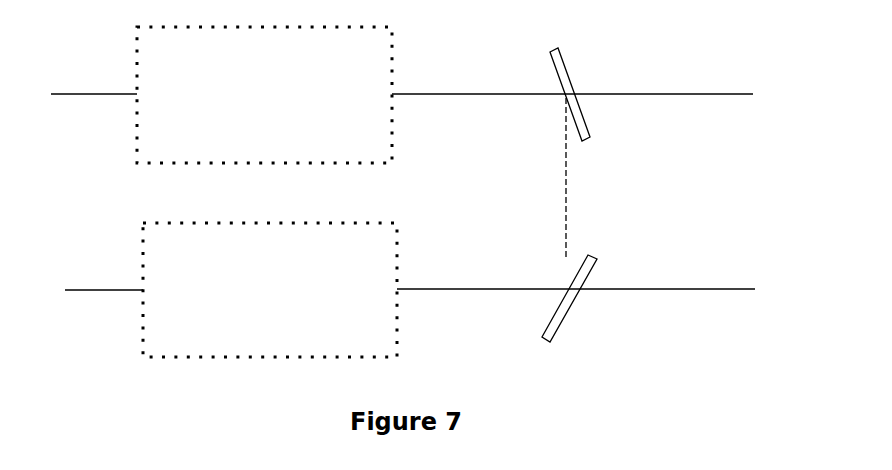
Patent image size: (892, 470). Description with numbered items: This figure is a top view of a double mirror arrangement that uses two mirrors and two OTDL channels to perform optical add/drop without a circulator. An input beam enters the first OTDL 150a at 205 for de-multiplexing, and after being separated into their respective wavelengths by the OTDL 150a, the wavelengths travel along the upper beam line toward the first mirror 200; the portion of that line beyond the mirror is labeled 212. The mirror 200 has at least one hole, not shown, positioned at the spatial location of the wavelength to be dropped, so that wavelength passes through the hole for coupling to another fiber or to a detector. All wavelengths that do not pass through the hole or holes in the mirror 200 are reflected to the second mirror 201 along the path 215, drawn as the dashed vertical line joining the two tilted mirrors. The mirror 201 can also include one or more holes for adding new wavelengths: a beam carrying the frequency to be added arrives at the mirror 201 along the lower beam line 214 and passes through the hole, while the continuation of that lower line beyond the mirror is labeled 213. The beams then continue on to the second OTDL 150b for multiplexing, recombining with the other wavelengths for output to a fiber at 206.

The OTDL 150a is at (264, 112).
The OTDL 150b is at (272, 308).
The mirror 200 is at (556, 47).
The mirror 201 is at (543, 345).
The input beam entry 205 is at (94, 79).
The fiber output 206 is at (100, 275).
The first output beam 212 is at (692, 83).
The second output beam 213 is at (680, 283).
The beam path 214 is at (491, 288).
The path 215 is at (565, 204).